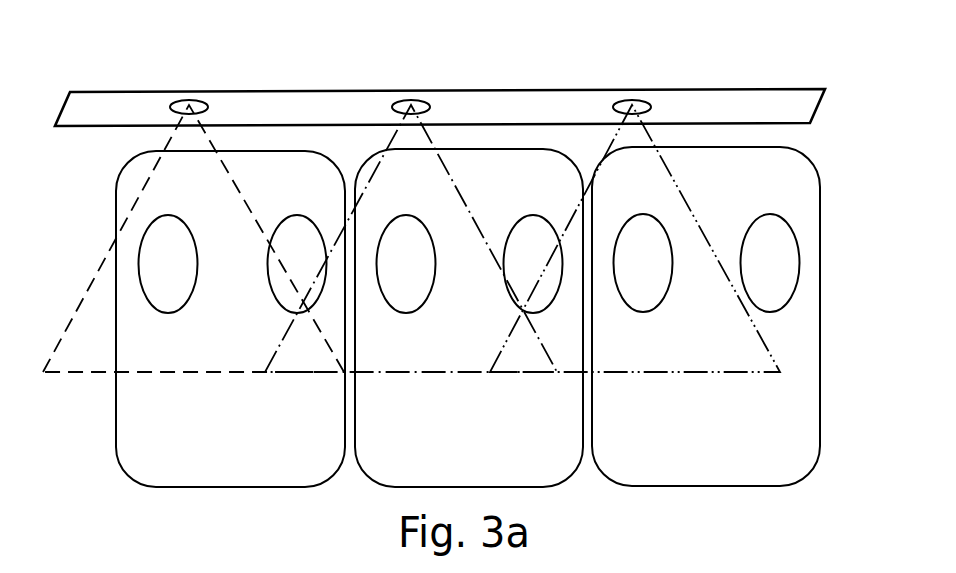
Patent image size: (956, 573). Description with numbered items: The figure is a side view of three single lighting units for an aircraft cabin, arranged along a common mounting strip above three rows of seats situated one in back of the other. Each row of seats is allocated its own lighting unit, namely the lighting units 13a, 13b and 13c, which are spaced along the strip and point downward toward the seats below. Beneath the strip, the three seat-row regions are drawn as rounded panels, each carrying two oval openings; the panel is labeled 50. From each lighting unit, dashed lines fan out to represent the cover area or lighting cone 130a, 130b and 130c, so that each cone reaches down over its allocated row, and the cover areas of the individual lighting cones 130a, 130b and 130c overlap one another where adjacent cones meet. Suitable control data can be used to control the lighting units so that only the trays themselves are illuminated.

The single lighting unit 13a is at (186, 103).
The single lighting unit 13b is at (418, 105).
The single lighting unit 13c is at (641, 105).
The panel with openings 50 is at (787, 265).
The lighting cone 130a is at (85, 360).
The lighting cone 130b is at (420, 352).
The lighting cone 130c is at (698, 350).